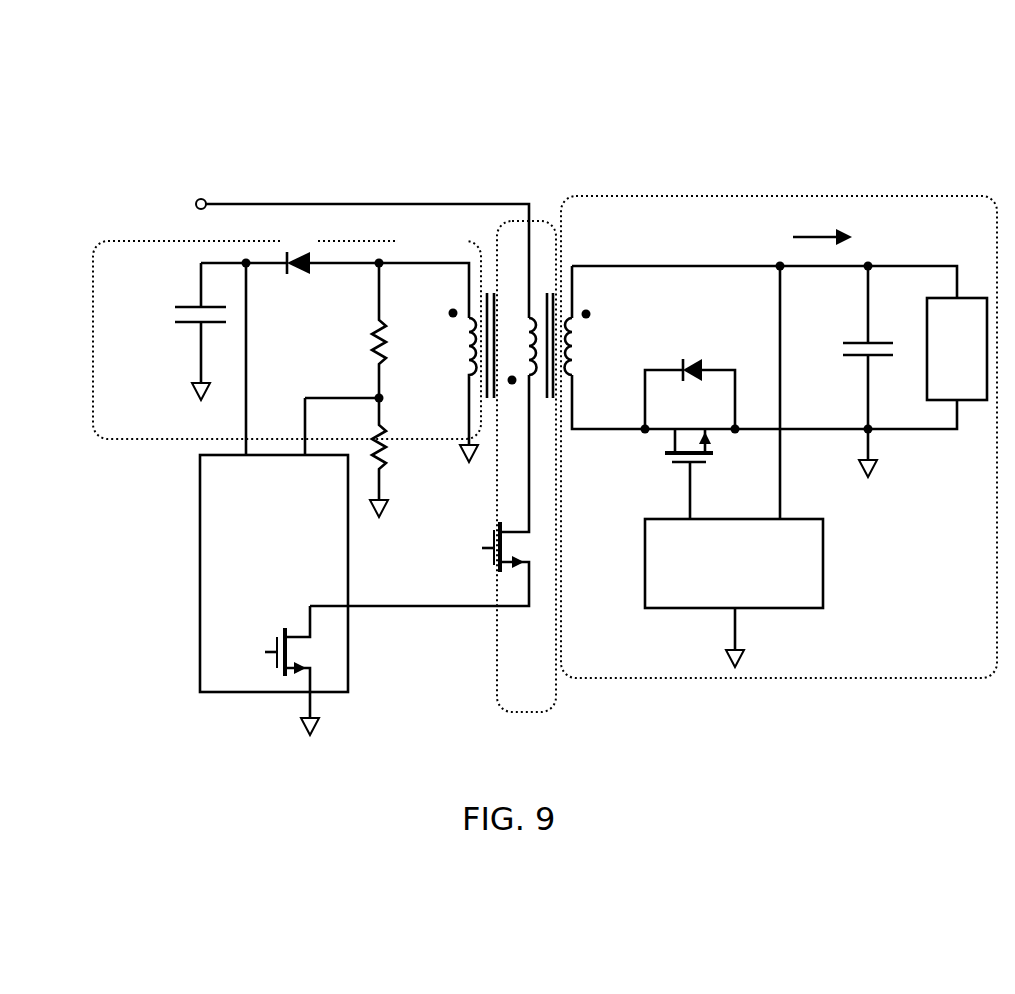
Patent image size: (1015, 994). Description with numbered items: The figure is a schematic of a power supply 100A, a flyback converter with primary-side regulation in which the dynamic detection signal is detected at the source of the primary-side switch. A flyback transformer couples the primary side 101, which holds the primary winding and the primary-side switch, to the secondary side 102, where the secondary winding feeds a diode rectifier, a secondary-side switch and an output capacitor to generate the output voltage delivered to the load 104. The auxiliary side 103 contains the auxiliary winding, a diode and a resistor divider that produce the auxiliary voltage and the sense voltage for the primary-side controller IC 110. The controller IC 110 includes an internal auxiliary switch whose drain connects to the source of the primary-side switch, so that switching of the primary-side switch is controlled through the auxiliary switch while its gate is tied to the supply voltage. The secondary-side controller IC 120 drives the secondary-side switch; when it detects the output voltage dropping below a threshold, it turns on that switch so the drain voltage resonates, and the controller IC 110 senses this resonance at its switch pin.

The power supply 100A is at (143, 113).
The primary side 101 is at (538, 712).
The secondary side 102 is at (895, 683).
The auxiliary side 103 is at (152, 442).
The load 104 is at (925, 333).
The primary-side controller IC 110 is at (274, 595).
The secondary-side controller IC 120 is at (734, 593).